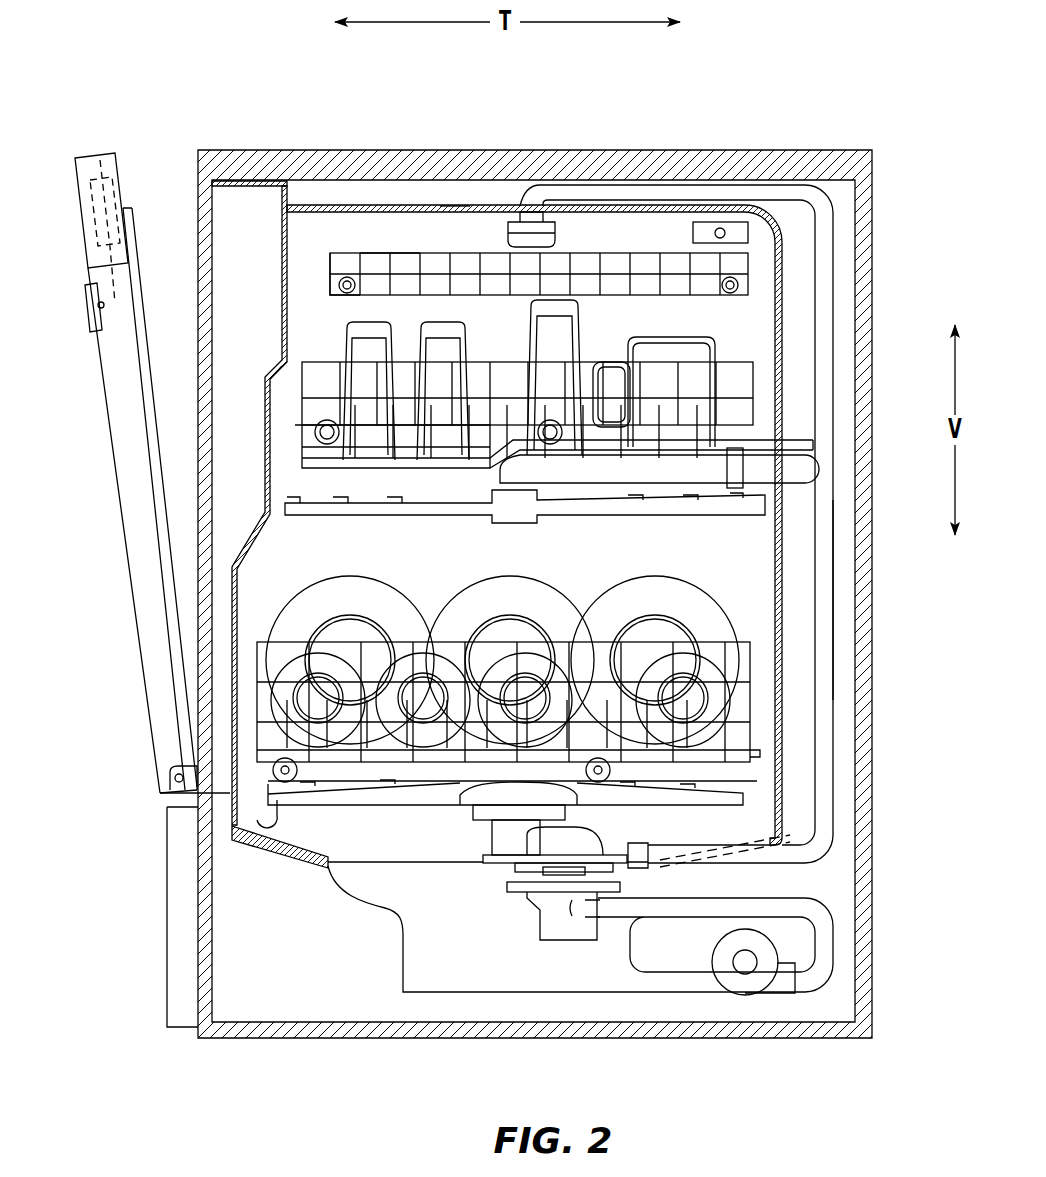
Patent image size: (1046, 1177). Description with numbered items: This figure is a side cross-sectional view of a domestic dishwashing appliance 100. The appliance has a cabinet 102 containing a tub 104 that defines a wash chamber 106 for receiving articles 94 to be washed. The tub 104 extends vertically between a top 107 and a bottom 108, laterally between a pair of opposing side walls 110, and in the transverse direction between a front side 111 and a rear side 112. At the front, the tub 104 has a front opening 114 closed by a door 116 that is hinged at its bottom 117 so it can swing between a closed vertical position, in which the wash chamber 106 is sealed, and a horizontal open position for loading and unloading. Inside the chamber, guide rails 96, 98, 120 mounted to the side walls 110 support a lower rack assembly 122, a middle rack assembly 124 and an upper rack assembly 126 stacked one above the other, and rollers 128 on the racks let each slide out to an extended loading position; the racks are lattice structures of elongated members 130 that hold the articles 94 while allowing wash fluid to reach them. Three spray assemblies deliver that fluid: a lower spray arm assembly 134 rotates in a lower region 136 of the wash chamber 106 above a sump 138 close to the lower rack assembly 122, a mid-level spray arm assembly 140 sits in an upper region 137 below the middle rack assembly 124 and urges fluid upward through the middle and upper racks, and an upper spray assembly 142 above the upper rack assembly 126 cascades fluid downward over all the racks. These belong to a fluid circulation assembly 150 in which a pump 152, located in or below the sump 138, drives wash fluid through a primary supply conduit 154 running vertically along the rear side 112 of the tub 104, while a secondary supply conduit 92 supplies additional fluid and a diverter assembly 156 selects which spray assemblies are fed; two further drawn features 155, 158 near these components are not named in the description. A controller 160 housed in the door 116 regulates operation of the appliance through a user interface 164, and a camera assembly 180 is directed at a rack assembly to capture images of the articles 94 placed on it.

The secondary supply conduit 92 is at (773, 192).
The articles 94 is at (558, 335).
The guide rail 96 is at (215, 791).
The guide rail 98 is at (320, 445).
The dishwasher appliance 100 is at (730, 75).
The cabinet 102 is at (876, 212).
The tub 104 is at (142, 885).
The wash chamber 106 is at (272, 590).
The top 107 is at (455, 218).
The bottom 108 is at (298, 835).
The side walls 110 is at (388, 250).
The front side 111 is at (280, 220).
The rear side 112 is at (780, 398).
The front opening 114 is at (220, 210).
The door 116 is at (160, 660).
The bottom 117 is at (165, 790).
The guide rail 120 is at (713, 297).
The lower rack assembly 122 is at (660, 640).
The middle rack assembly 124 is at (295, 375).
The upper rack assembly 126 is at (343, 250).
The rollers 128 is at (418, 294).
The elongated members 130 is at (460, 640).
The lower spray arm assembly 134 is at (373, 805).
The lower region 136 is at (755, 770).
The upper region 137 is at (765, 360).
The sump 138 is at (268, 852).
The mid-level spray arm assembly 140 is at (637, 510).
The upper spray assembly 142 is at (556, 232).
The fluid circulation assembly 150 is at (835, 830).
The pump 152 is at (757, 985).
The primary supply conduit 154 is at (845, 620).
The spray arm feed tube 155 is at (707, 485).
The diverter assembly 156 is at (540, 910).
The spray arm hub 158 is at (500, 840).
The controller 160 is at (100, 160).
The user interface 164 is at (92, 310).
The camera assembly 180 is at (712, 222).